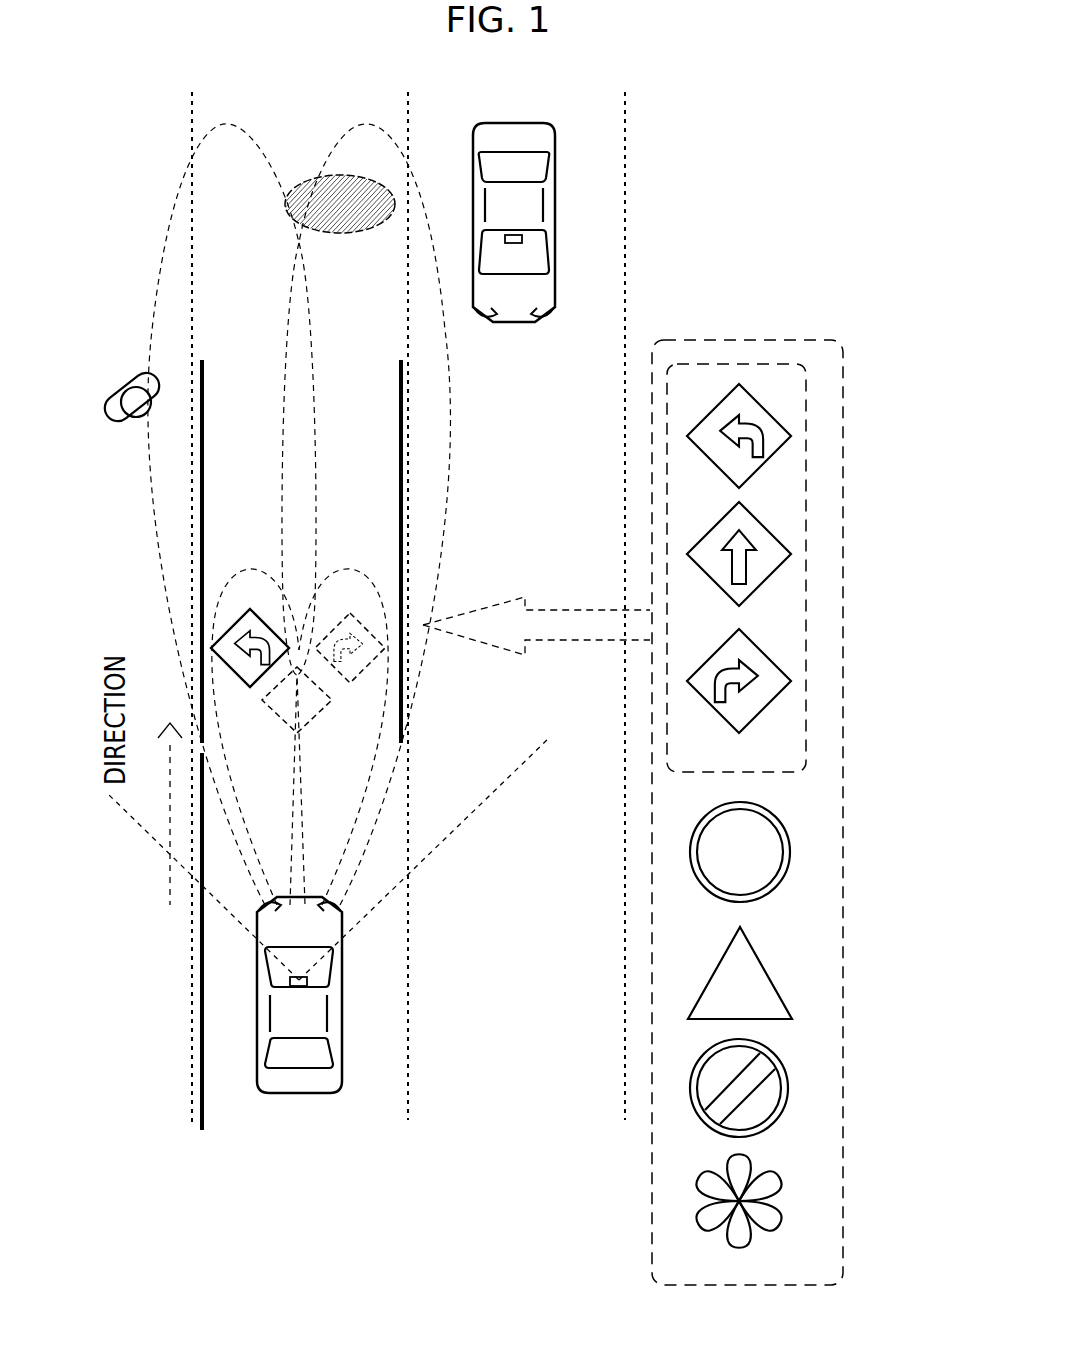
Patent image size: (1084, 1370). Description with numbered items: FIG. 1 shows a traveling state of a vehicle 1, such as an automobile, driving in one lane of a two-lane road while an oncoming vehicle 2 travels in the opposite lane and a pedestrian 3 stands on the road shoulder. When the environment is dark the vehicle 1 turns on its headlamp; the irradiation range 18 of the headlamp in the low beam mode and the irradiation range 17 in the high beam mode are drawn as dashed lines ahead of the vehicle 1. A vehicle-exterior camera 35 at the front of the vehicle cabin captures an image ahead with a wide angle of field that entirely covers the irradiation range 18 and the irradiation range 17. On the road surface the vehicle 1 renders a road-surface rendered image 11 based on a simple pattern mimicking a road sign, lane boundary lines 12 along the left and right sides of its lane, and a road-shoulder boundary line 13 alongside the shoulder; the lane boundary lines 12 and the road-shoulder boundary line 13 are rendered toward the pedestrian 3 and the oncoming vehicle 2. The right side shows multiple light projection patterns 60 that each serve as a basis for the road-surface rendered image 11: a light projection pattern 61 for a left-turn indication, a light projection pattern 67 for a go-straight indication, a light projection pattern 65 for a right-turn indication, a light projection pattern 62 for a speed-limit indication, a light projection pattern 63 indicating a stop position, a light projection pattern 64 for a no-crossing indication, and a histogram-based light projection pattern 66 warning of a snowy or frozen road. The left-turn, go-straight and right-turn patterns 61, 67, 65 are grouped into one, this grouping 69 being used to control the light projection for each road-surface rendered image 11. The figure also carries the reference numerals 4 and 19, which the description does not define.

The vehicle 1 is at (266, 1029).
The oncoming vehicle 2 is at (543, 202).
The pedestrian 3 is at (138, 375).
The obstacle region 4 is at (355, 183).
The road-surface rendered image 11 is at (340, 568).
The lane boundary lines 12 is at (197, 552).
The road-shoulder boundary line 13 is at (198, 945).
The irradiation range of the headlamp in high beam mode 17 is at (435, 410).
The irradiation range of the headlamp in low beam mode 18 is at (368, 699).
The camera imaging range 19 is at (447, 825).
The vehicle-exterior camera 35 is at (308, 977).
The light projection patterns 60 is at (782, 338).
The light projection pattern for left-turn indication 61 is at (787, 442).
The light projection pattern for speed-limit indication 62 is at (789, 856).
The light projection pattern for indicating a stop position 63 is at (780, 987).
The light projection pattern for no-crossing indication 64 is at (789, 1092).
The light projection pattern for right-turn indication 65 is at (778, 672).
The histogram-based light projection pattern 66 is at (778, 1182).
The light projection pattern for go-straight indication 67 is at (778, 544).
The curve sign pattern group 69 is at (712, 362).